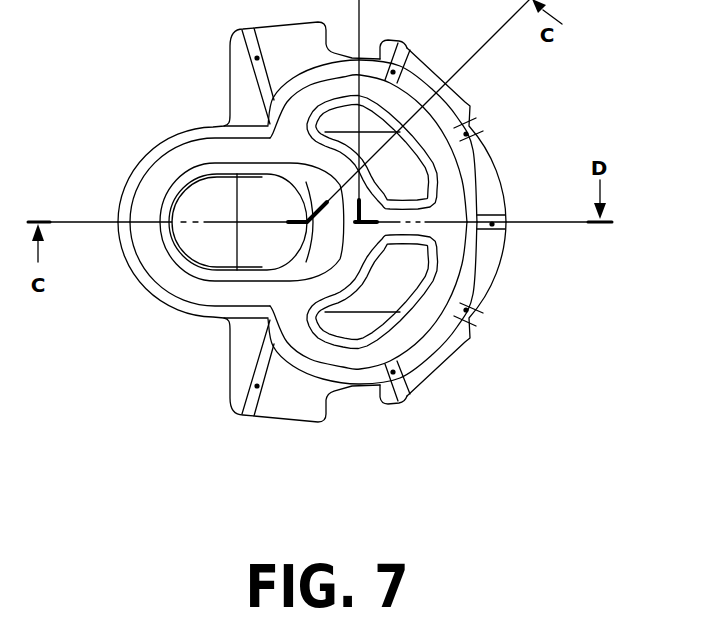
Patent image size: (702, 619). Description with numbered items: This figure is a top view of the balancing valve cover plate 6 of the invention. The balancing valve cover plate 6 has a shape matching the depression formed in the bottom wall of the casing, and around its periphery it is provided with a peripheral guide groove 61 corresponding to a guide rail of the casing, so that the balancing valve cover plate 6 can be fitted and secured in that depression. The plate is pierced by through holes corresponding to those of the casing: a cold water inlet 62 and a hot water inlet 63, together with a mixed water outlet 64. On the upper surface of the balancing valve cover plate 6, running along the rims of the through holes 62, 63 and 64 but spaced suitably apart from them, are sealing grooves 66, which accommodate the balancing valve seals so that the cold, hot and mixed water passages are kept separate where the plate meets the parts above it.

The balancing valve cover plate 6 is at (357, 263).
The peripheral guide groove 61 is at (352, 400).
The cold water inlet 62 is at (367, 323).
The hot water inlet 63 is at (413, 54).
The mixed water outlet 64 is at (204, 250).
The sealing grooves 66 is at (178, 162).